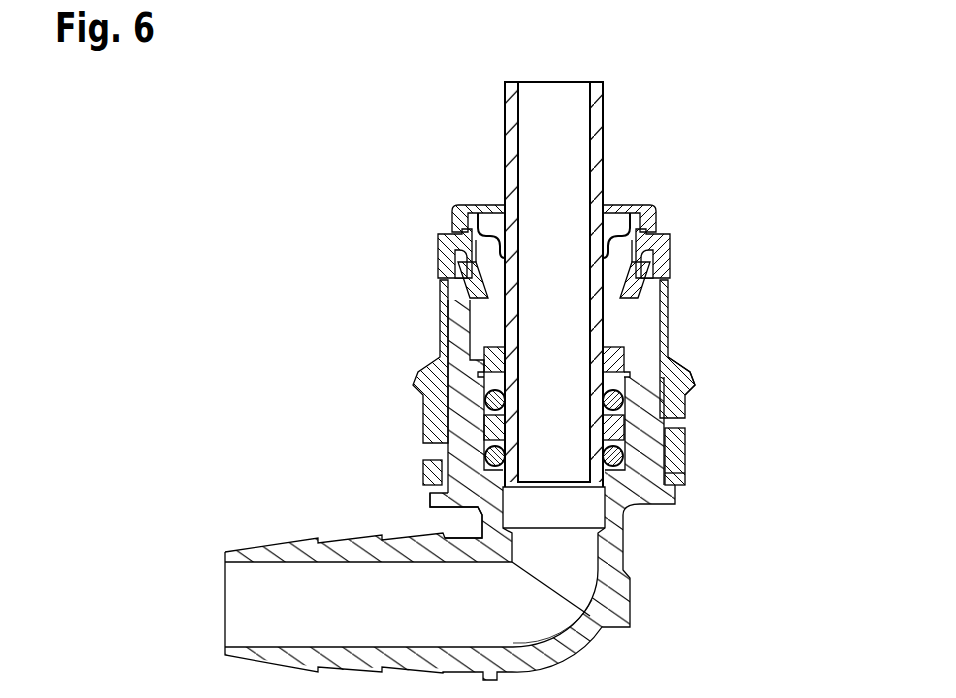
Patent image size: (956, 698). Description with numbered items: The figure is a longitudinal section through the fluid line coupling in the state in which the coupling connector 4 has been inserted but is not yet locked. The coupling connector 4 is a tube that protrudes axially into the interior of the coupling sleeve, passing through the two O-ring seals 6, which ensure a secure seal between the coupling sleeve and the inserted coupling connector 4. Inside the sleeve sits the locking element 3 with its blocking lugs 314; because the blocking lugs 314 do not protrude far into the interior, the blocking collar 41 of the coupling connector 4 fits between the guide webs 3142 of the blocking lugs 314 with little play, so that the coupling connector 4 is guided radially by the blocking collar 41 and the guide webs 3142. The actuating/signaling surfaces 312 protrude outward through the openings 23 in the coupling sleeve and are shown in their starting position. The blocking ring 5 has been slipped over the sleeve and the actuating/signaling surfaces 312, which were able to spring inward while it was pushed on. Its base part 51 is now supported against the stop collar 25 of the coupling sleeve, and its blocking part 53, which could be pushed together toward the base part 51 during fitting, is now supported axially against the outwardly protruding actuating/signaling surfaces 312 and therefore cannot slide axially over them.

The locking element 3 is at (638, 493).
The coupling connector 4 is at (600, 124).
The blocking ring 5 is at (682, 450).
The seals 6 is at (622, 402).
The openings 23 is at (418, 318).
The stop collar 25 is at (440, 496).
The blocking collar 41 is at (490, 236).
The base part 51 is at (424, 475).
The blocking part 53 is at (682, 378).
The actuating/signaling surfaces 312 is at (440, 255).
The blocking lugs 314 is at (433, 228).
The guide webs 3142 is at (466, 216).